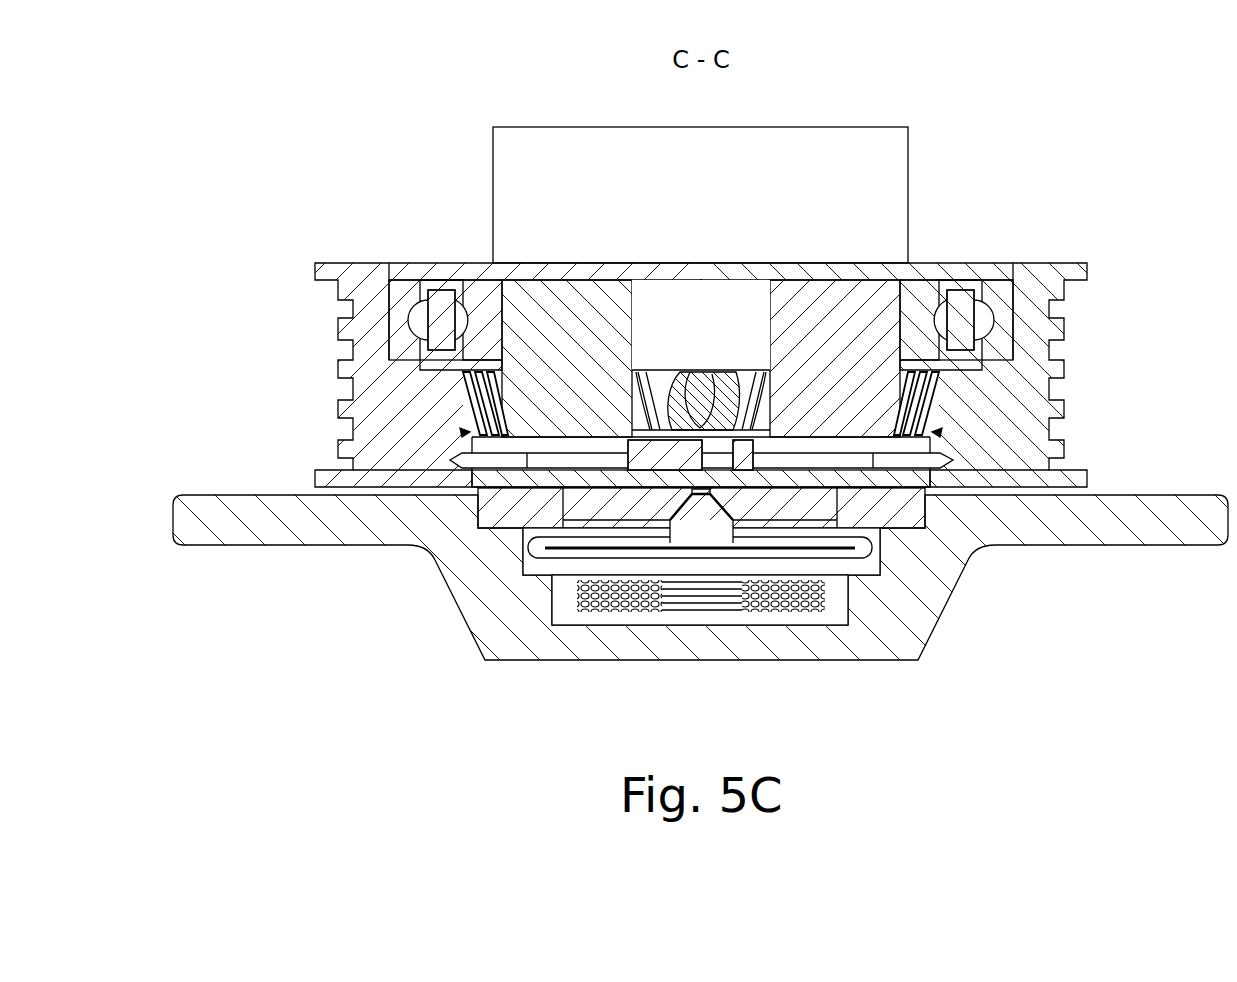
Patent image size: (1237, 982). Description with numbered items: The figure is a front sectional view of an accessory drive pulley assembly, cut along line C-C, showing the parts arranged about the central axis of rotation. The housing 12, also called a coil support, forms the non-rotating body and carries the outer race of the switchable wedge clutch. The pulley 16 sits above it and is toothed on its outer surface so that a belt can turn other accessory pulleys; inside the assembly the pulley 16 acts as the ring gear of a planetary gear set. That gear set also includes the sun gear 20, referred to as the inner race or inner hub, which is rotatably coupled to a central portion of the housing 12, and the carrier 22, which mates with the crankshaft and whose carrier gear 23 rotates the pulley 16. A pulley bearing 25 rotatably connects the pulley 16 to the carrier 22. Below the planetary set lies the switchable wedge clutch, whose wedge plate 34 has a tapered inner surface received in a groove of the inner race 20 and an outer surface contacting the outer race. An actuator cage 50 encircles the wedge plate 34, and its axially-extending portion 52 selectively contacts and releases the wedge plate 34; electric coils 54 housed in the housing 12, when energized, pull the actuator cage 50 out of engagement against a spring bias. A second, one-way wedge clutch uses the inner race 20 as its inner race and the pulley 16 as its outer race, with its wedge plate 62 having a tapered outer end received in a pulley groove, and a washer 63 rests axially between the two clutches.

The housing 12 is at (265, 530).
The pulley 16 is at (362, 411).
The sun gear 20 is at (512, 532).
The carrier 22 is at (776, 405).
The carrier gear 23 is at (707, 403).
The pulley bearing 25 is at (990, 347).
The wedge plate 34 is at (667, 460).
The actuator cage 50 is at (880, 575).
The axially-extending portion 52 is at (707, 530).
The electric coils 54 is at (577, 603).
The wedge plate 62 is at (957, 463).
The washer 63 is at (907, 473).